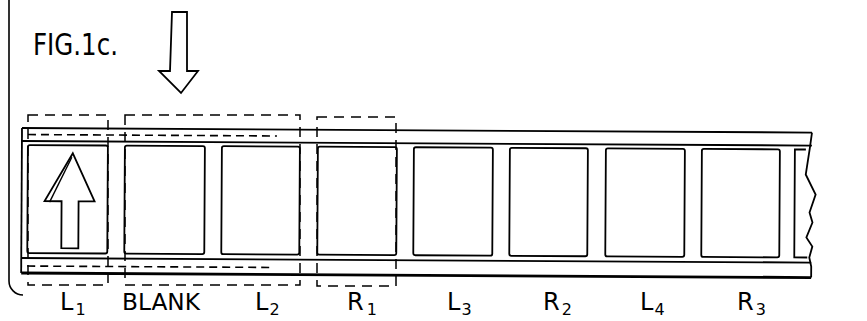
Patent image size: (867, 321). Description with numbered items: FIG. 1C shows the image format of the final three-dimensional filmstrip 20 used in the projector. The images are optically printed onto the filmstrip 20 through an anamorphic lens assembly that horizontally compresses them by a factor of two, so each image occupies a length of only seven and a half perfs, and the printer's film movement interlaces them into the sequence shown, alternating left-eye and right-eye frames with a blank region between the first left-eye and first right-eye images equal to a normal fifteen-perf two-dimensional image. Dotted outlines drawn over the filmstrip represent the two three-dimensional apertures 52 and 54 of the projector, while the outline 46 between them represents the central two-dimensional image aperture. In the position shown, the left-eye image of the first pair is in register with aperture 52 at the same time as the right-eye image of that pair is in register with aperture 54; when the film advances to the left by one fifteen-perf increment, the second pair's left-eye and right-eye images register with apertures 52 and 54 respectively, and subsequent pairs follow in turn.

The filmstrip 20 is at (725, 133).
The central 2-D image aperture 46 is at (223, 113).
The 3-D aperture 52 is at (75, 113).
The 3-D aperture 54 is at (345, 115).